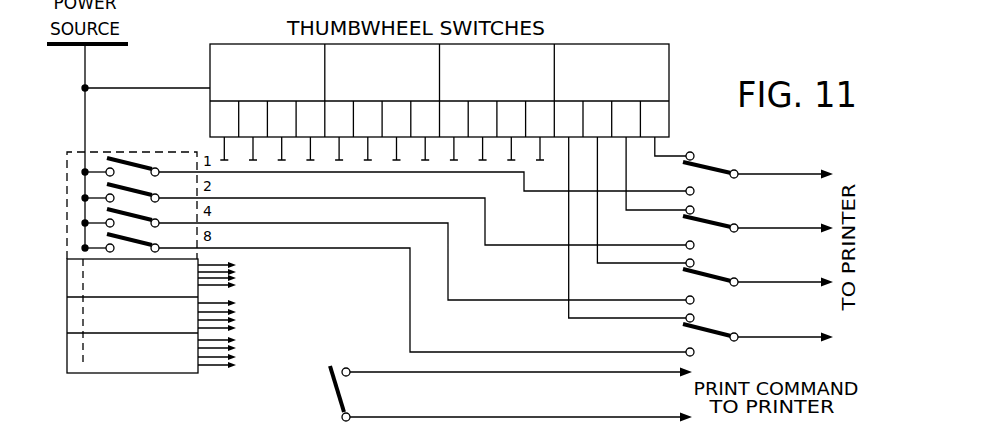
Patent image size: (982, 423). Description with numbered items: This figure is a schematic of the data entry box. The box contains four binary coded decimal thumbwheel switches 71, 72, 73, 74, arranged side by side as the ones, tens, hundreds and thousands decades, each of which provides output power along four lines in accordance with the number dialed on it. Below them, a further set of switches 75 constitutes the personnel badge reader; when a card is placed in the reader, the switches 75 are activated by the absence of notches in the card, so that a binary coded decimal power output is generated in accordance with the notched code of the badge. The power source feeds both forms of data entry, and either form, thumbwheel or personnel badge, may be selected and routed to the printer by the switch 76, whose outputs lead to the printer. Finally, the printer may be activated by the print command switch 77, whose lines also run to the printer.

The binary coded decimal thumbwheel switch 71 is at (637, 57).
The binary coded decimal thumbwheel switch 72 is at (535, 67).
The binary coded decimal thumbwheel switch 73 is at (340, 63).
The binary coded decimal thumbwheel switch 74 is at (260, 57).
The switches 75 is at (120, 376).
The switch 76 is at (713, 168).
The print command switch 77 is at (333, 386).